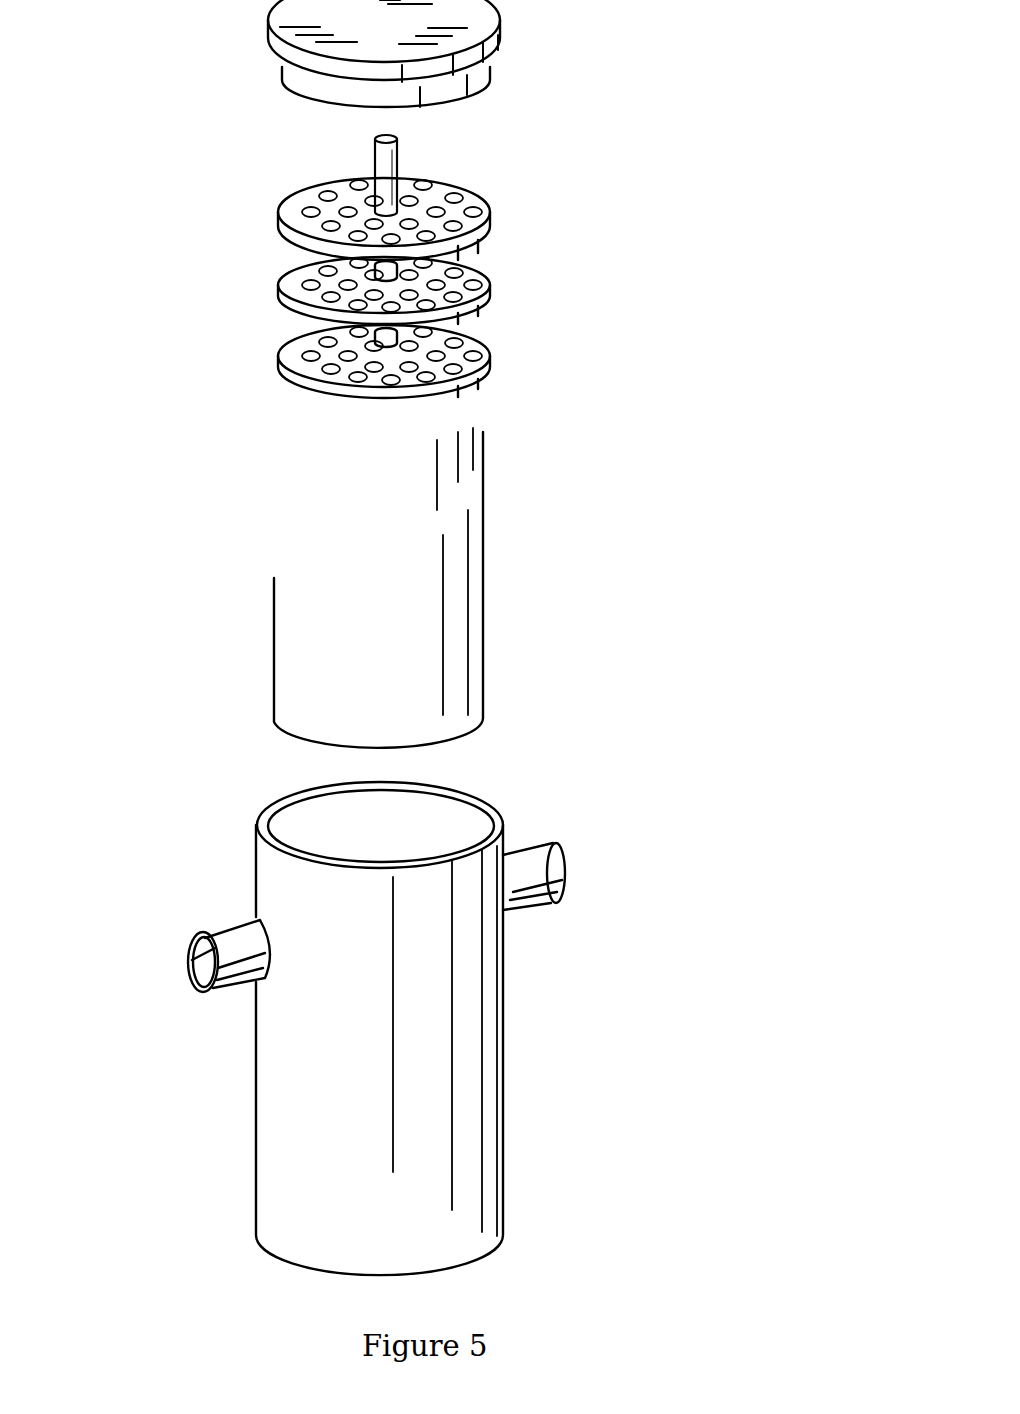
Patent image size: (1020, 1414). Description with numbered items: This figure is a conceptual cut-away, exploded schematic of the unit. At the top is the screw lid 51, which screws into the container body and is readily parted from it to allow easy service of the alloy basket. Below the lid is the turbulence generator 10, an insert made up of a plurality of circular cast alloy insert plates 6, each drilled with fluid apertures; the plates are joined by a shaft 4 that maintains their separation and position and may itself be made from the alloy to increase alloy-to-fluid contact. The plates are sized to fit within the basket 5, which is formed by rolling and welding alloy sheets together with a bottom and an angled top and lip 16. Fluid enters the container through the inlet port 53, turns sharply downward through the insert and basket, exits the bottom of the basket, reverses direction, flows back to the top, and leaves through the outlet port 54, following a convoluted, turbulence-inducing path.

The screw lid 51 is at (503, 27).
The shaft 4 is at (400, 150).
The insert plates 6 is at (490, 222).
The turbulence generator 10 is at (743, 115).
The angled top and lip 16 is at (495, 432).
The basket 5 is at (466, 565).
The outlet port 54 is at (568, 863).
The inlet port 53 is at (178, 985).